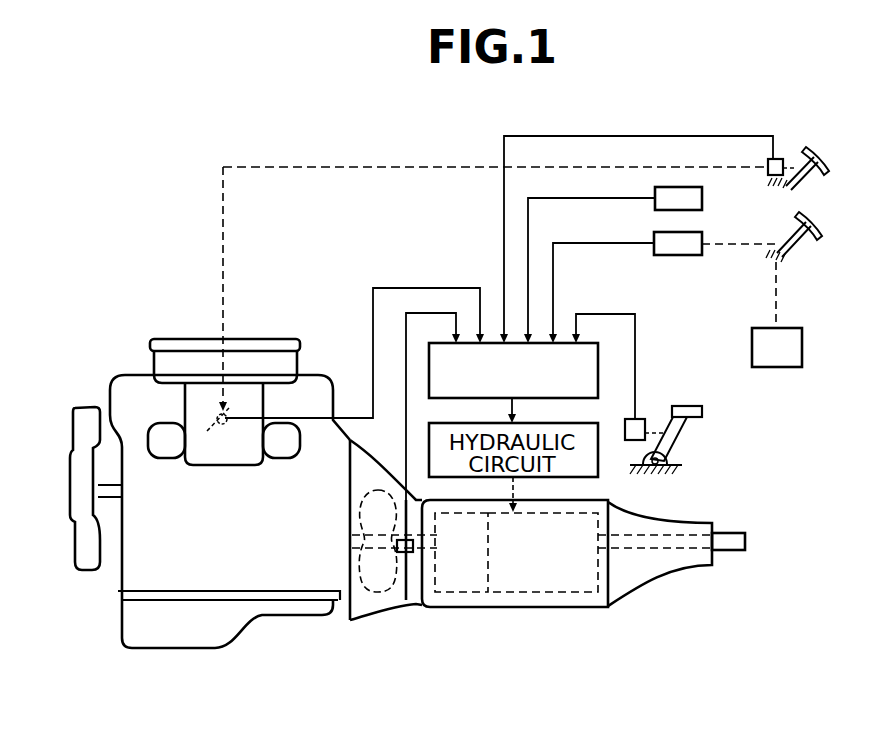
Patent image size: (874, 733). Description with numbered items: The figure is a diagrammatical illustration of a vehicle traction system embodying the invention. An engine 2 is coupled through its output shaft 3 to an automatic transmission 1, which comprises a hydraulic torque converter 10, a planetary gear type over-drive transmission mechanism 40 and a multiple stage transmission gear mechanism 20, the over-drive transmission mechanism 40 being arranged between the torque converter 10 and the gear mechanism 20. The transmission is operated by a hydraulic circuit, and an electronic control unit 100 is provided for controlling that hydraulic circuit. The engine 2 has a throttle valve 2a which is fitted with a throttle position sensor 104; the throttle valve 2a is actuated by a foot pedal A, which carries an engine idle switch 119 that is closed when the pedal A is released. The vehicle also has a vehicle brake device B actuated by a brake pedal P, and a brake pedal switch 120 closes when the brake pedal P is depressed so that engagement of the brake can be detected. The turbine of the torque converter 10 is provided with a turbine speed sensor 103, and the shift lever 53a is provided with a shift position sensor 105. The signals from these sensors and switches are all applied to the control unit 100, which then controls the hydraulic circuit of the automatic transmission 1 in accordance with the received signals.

The automatic transmission 1 is at (566, 617).
The engine 2 is at (261, 575).
The throttle valve 2a is at (217, 426).
The output shaft 3 is at (356, 551).
The hydraulic torque converter 10 is at (372, 623).
The multiple stage transmission gear mechanism 20 is at (525, 592).
The planetary gear type over-drive transmission mechanism 40 is at (455, 592).
The electronic control unit 100 is at (598, 380).
The turbine speed sensor 103 is at (405, 601).
The throttle position sensor 104 is at (228, 408).
The shift position sensor 105 is at (641, 419).
The engine idle switch 119 is at (702, 199).
The brake pedal switch 120 is at (684, 256).
The shift lever 53a is at (700, 405).
The foot pedal A is at (812, 176).
The brake pedal P is at (805, 256).
The vehicle brake device B is at (802, 352).